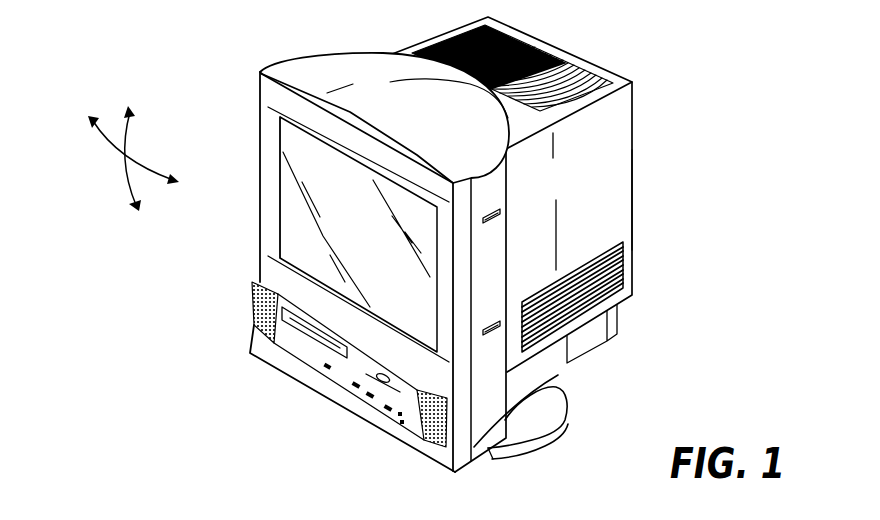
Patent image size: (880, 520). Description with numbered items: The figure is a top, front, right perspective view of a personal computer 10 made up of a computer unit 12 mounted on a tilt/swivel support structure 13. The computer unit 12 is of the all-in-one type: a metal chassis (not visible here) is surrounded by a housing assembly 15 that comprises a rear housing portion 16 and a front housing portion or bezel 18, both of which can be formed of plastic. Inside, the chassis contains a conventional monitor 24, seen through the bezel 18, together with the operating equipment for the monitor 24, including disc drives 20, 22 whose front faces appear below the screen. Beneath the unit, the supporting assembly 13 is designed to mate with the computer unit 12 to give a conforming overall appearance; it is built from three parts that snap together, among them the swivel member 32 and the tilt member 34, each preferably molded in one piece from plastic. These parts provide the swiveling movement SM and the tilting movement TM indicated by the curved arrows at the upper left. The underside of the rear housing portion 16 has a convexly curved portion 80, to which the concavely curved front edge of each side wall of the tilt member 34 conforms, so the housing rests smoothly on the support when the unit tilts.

The personal computer 10 is at (631, 56).
The computer unit 12 is at (641, 152).
The tilt/swivel support structure 13 is at (568, 421).
The housing assembly 15 is at (622, 220).
The rear housing portion 16 is at (633, 185).
The front housing portion or bezel 18 is at (266, 95).
The disc drive 20 is at (307, 330).
The disc drive 22 is at (380, 397).
The monitor 24 is at (297, 222).
The swivel member 32 is at (536, 445).
The tilt member 34 is at (561, 375).
The convexly curved portion 80 is at (499, 428).
The tilting movement TM is at (127, 135).
The swiveling movement SM is at (110, 148).